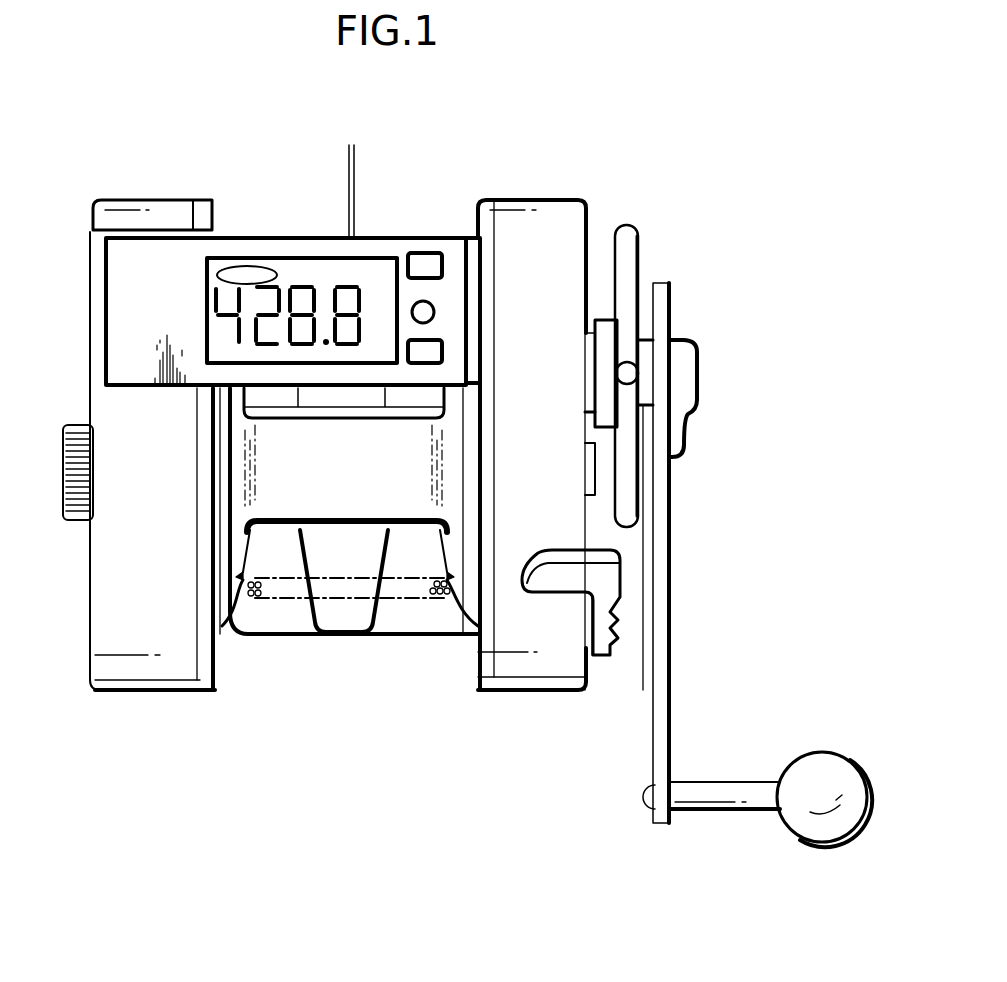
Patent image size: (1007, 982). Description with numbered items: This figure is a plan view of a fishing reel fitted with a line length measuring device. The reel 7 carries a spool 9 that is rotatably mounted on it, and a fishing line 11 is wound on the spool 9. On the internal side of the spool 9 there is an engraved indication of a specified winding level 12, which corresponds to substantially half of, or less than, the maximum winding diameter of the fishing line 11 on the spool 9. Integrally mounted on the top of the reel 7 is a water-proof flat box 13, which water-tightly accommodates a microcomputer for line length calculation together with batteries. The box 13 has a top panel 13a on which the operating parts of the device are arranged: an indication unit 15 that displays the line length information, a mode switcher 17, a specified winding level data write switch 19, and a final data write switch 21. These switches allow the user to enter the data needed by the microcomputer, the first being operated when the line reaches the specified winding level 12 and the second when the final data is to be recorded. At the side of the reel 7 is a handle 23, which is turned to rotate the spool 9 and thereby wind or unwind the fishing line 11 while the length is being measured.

The reel 7 is at (130, 200).
The spool 9 is at (267, 465).
The fishing line 11 is at (348, 198).
The specified winding level 12 is at (445, 580).
The water-proof flat box 13 is at (311, 283).
The top panel 13a is at (150, 383).
The indication unit 15 is at (218, 333).
The mode switcher 17 is at (417, 256).
The specified winding level data write switch 19 is at (428, 312).
The final data write switch 21 is at (435, 348).
The handle 23 is at (665, 562).